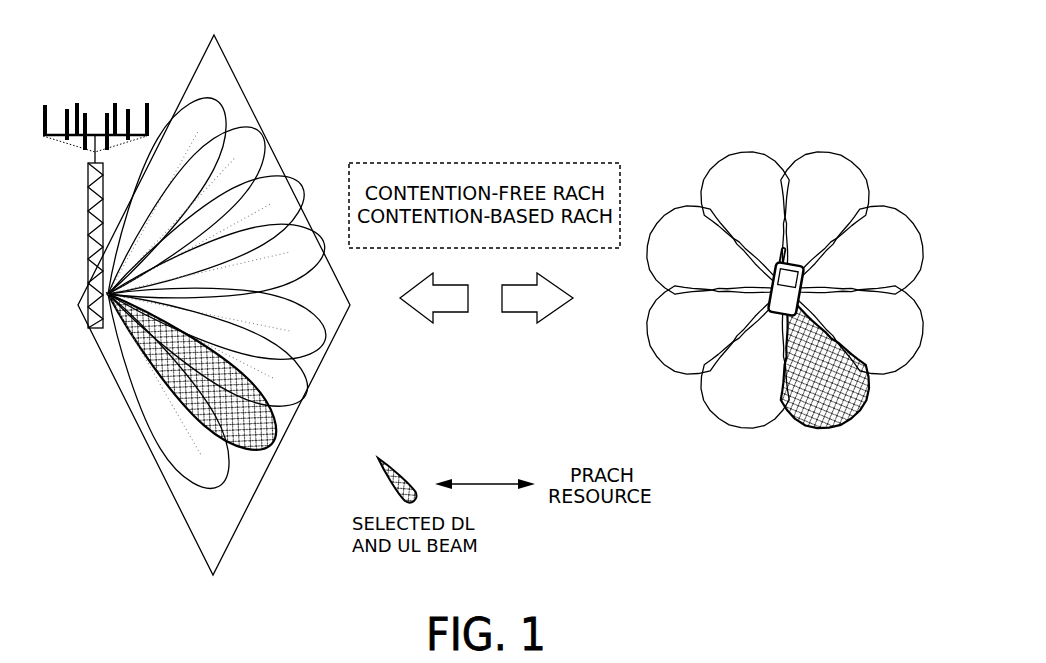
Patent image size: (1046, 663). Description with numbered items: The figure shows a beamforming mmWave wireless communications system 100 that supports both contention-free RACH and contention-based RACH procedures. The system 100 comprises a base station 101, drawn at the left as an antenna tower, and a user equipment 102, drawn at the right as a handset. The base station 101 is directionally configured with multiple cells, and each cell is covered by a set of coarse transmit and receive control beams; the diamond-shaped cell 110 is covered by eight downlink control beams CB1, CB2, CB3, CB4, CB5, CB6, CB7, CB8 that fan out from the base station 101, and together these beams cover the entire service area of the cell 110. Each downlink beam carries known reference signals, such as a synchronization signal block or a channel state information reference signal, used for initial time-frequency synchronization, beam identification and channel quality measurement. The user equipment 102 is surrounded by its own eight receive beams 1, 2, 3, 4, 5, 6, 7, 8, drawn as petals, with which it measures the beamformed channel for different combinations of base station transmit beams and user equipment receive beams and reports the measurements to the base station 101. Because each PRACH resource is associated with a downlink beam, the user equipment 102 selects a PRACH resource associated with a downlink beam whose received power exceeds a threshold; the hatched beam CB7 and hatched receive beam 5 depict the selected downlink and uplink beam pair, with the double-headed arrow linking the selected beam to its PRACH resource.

The beamforming wireless communications system 100 is at (841, 50).
The base station 101 is at (95, 106).
The user equipment 102 is at (798, 261).
The cell 110 is at (203, 527).
The downlink control beam CB1 is at (162, 196).
The downlink control beam CB2 is at (184, 213).
The downlink control beam CB3 is at (204, 240).
The downlink control beam CB4 is at (216, 269).
The downlink control beam CB5 is at (217, 316).
The downlink control beam CB6 is at (206, 344).
The downlink control beam CB7 is at (189, 368).
The downlink control beam CB8 is at (163, 390).
The UE RX beam 1 is at (757, 223).
The UE RX beam 2 is at (718, 262).
The UE RX beam 3 is at (718, 318).
The UE RX beam 4 is at (757, 357).
The UE RX beam 5 is at (813, 357).
The UE RX beam 6 is at (852, 318).
The UE RX beam 7 is at (852, 262).
The UE RX beam 8 is at (813, 223).